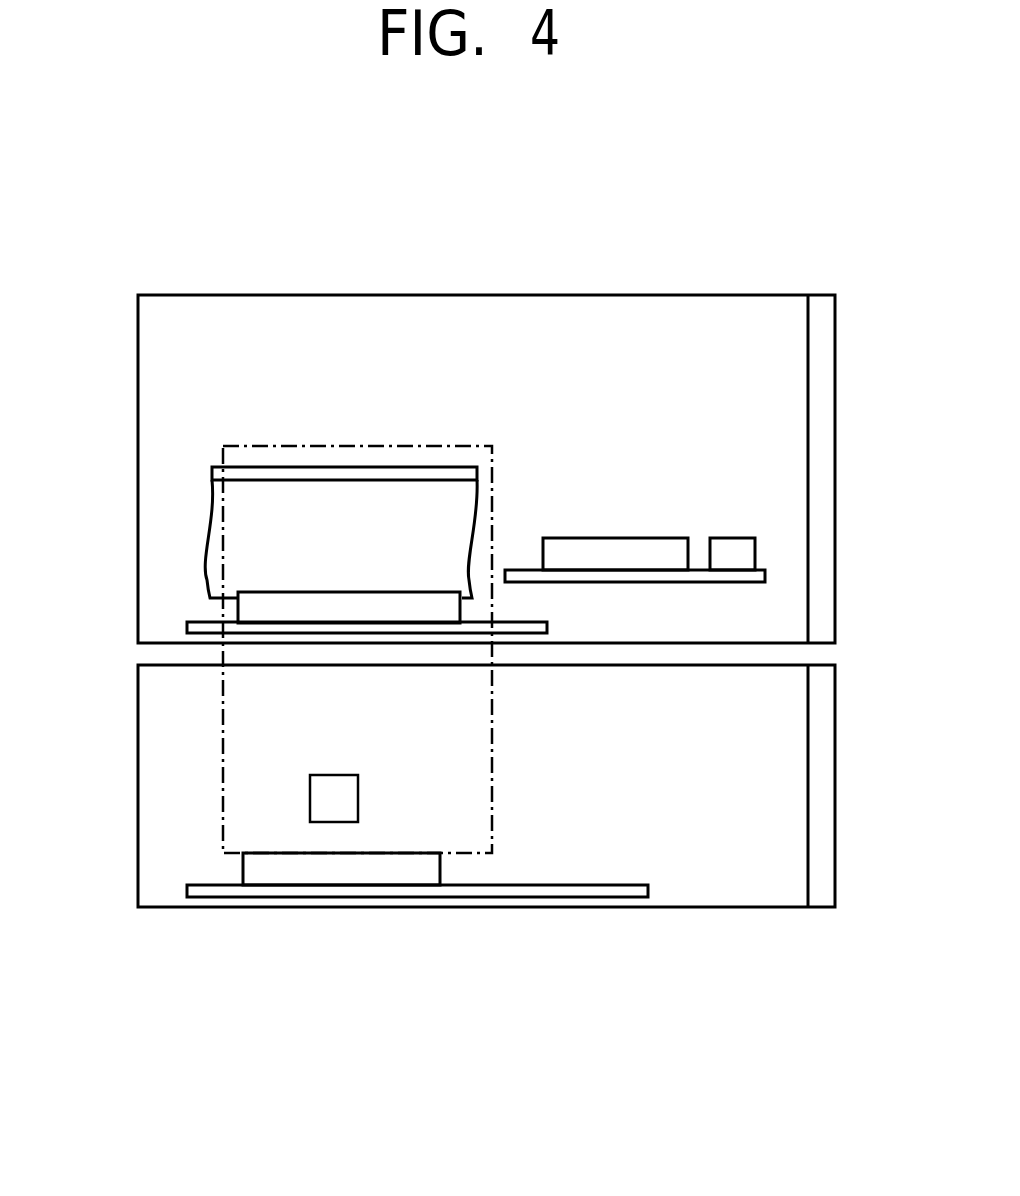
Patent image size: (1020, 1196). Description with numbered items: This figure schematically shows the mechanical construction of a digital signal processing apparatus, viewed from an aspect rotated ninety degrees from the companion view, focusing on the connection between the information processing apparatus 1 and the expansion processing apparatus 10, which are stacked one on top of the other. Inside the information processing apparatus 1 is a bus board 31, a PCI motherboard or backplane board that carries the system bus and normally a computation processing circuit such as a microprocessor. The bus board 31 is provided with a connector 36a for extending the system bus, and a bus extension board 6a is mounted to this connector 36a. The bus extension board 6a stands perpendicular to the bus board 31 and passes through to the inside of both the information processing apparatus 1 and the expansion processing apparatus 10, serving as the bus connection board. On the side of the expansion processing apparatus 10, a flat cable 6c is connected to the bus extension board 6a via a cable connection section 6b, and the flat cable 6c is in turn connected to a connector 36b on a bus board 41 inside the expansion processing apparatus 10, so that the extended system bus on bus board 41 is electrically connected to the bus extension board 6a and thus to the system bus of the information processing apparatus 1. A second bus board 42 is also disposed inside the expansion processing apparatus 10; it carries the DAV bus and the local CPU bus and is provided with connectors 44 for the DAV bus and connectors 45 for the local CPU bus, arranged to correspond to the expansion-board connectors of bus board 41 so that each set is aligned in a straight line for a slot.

The information processing apparatus 1 is at (757, 922).
The expansion processing apparatus 10 is at (740, 274).
The bus extension board 6a is at (223, 728).
The cable connection section 6b is at (395, 476).
The flat cable 6c is at (445, 515).
The connector 36b is at (302, 603).
The bus board 41 is at (195, 630).
The bus board 42 is at (765, 574).
The connectors 44 is at (612, 557).
The connectors 45 is at (738, 553).
The connector 36a is at (328, 870).
The bus board 31 is at (568, 890).